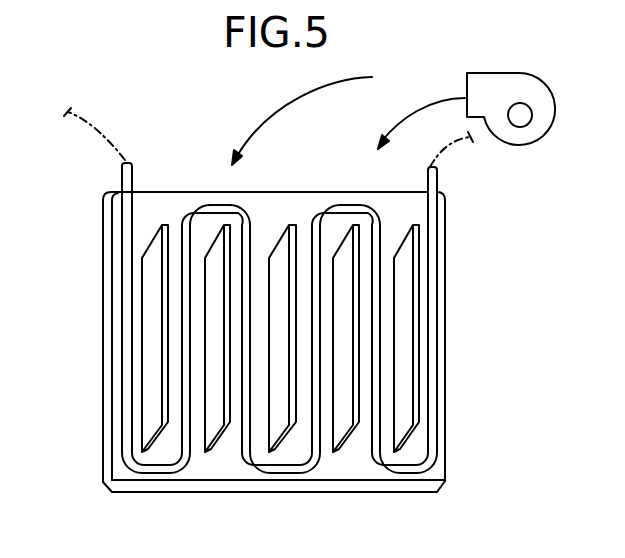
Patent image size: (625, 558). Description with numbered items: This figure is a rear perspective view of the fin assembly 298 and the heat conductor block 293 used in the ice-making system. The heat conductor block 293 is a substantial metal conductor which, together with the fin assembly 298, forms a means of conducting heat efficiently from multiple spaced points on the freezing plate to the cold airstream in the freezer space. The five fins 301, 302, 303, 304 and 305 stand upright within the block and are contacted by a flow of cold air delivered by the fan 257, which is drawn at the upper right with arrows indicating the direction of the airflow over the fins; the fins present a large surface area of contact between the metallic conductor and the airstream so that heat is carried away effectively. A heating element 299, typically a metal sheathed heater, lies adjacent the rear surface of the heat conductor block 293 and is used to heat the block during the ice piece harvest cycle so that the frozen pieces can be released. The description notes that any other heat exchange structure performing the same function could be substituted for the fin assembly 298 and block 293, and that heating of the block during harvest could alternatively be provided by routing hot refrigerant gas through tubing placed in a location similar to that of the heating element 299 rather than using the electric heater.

The fan 257 is at (513, 73).
The heat conductor block 293 is at (103, 447).
The fin assembly 298 is at (448, 371).
The heating element 299 is at (128, 200).
The fin 301 is at (160, 452).
The fin 302 is at (218, 450).
The fin 303 is at (284, 450).
The fin 304 is at (352, 450).
The fin 305 is at (413, 452).